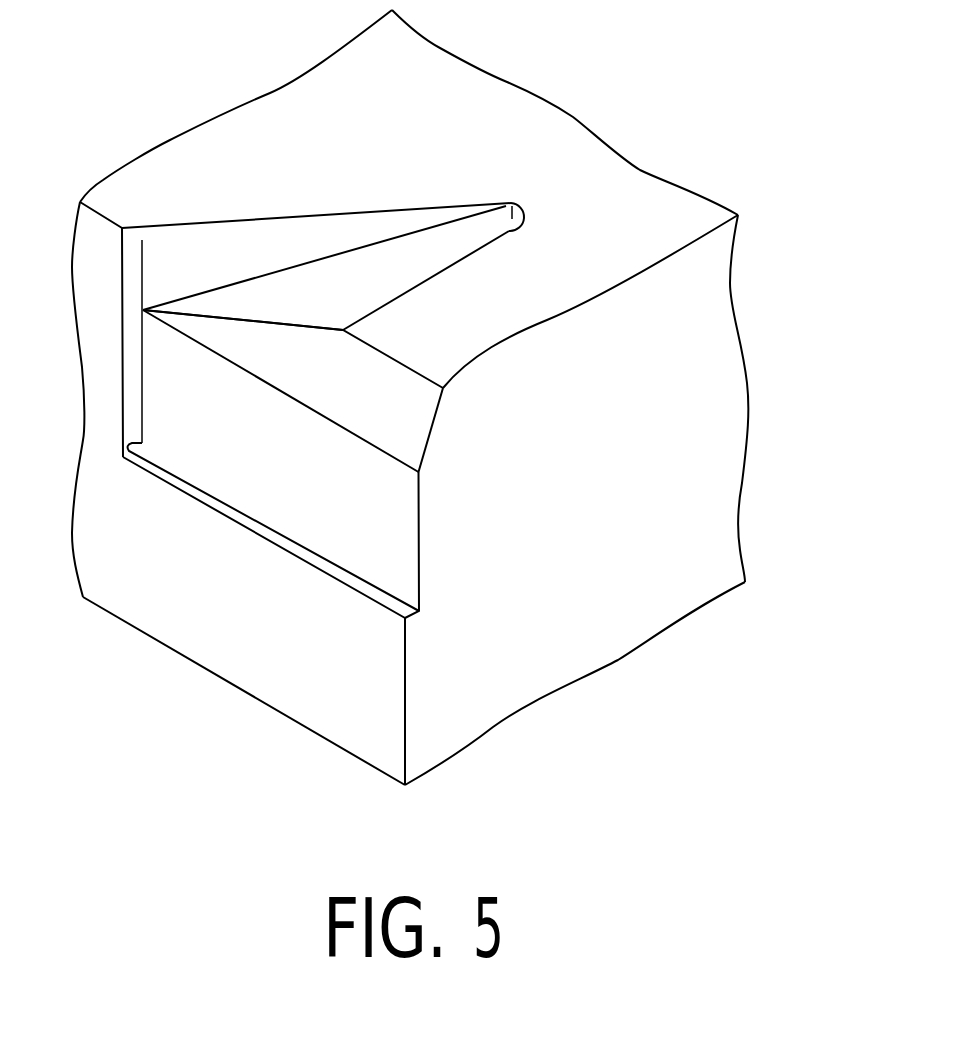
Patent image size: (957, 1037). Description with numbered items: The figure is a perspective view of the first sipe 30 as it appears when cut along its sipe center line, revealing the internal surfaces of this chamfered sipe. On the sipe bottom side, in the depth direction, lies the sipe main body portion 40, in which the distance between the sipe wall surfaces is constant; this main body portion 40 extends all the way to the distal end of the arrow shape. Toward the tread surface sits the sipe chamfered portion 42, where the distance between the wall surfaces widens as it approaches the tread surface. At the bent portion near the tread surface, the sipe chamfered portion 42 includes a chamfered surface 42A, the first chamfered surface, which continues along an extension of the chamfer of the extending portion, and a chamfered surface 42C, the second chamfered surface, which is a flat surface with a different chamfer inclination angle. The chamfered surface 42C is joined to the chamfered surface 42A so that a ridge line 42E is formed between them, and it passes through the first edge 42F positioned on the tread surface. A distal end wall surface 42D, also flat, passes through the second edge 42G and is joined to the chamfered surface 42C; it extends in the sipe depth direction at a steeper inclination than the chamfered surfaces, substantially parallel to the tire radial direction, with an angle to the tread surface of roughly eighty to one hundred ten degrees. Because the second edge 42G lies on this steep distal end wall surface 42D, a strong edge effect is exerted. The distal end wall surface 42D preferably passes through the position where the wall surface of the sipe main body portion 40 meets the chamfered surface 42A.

The first sipe 30 is at (247, 198).
The sipe main body portion 40 is at (245, 428).
The sipe chamfered portion 42 is at (330, 392).
The chamfered surface (first chamfered surface) 42A is at (318, 337).
The chamfered surface (second chamfered surface) 42C is at (438, 255).
The distal end wall surface 42D is at (200, 242).
The ridge line 42E is at (333, 328).
The first edge 42F is at (493, 242).
The second edge 42G is at (280, 213).